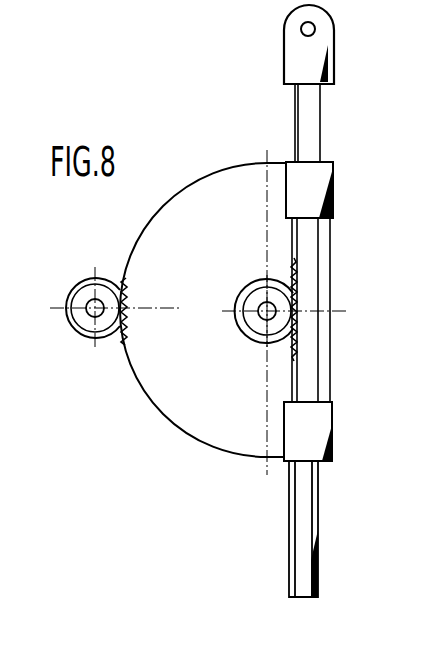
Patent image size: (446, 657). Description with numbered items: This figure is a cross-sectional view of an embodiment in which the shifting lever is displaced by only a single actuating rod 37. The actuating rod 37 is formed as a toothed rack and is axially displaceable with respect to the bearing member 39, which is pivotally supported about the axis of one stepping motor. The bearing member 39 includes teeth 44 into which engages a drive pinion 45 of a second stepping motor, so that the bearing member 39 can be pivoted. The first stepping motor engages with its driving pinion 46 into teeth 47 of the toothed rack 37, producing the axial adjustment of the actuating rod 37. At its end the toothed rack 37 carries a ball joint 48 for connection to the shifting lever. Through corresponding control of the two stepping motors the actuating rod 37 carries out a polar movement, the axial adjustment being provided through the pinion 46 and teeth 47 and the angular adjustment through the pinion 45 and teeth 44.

The actuating rod 37 is at (315, 141).
The bearing member 39 is at (242, 182).
The teeth 44 is at (128, 302).
The drive pinion 45 is at (82, 320).
The driving pinion 46 is at (250, 334).
The teeth 47 is at (296, 283).
The ball joint 48 is at (323, 38).